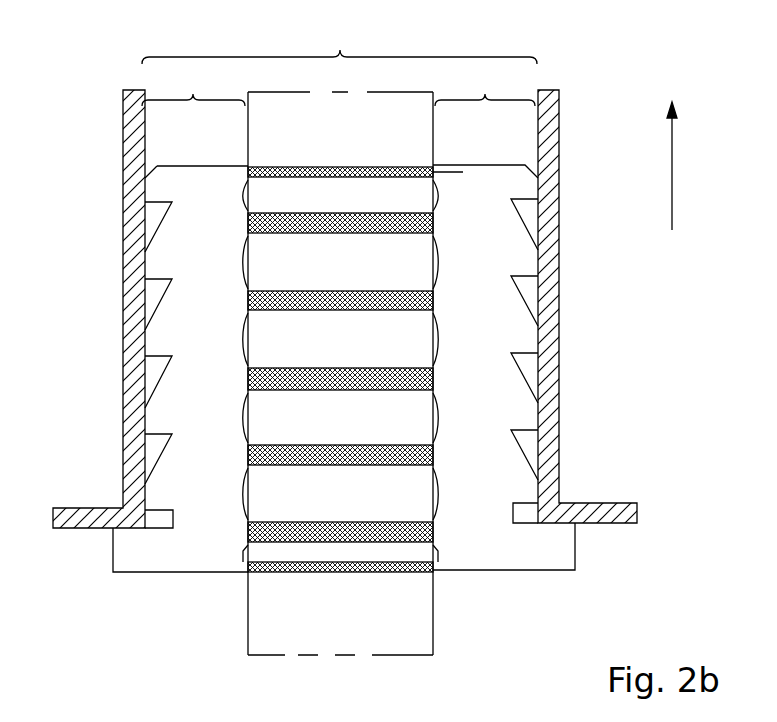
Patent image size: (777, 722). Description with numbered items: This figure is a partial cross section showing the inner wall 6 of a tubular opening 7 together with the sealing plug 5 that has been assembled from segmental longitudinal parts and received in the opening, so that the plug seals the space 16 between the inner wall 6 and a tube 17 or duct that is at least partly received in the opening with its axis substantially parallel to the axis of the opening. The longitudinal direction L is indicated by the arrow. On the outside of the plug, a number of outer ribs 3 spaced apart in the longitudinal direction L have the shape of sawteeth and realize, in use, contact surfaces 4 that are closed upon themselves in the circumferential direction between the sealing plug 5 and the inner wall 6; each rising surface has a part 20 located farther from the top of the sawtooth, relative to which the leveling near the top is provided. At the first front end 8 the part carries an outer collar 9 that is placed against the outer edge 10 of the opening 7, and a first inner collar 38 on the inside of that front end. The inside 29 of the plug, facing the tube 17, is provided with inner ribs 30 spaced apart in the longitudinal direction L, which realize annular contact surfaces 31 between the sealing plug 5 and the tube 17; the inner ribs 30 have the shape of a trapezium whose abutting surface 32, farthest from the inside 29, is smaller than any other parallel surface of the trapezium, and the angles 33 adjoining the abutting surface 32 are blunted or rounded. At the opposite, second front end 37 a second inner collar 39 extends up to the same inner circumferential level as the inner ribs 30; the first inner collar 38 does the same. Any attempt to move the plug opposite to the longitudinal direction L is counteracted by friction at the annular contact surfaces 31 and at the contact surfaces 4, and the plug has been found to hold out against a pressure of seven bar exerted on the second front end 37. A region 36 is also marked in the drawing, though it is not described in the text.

The tubular opening 7 is at (339, 43).
The space 16 is at (338, 87).
The tube 17 is at (328, 145).
The second front end 37 is at (207, 166).
The second inner collar 39 is at (463, 166).
The angles adjoining the abutting surface 33 is at (252, 204).
The chamber 36 is at (505, 177).
The inner wall 6 is at (141, 223).
The sealing plug 5 is at (505, 305).
The outer ribs 3 is at (160, 264).
The contact surfaces 4 is at (153, 350).
The part of the rising surface 20 is at (157, 305).
The inner ribs 30 is at (244, 222).
The annular contact surfaces 31 is at (343, 291).
The abutting surface 32 is at (248, 302).
The inside 29 is at (243, 340).
The first inner collar 38 is at (246, 567).
The first front end 8 is at (490, 570).
The outer collar 9 is at (129, 555).
The outer edge 10 is at (75, 528).
The longitudinal direction L is at (681, 166).